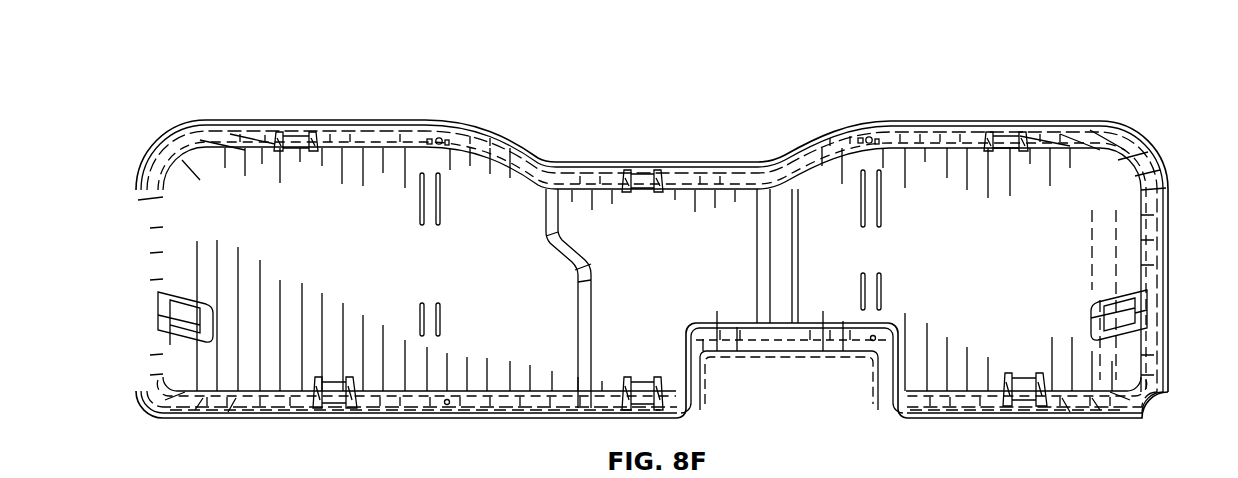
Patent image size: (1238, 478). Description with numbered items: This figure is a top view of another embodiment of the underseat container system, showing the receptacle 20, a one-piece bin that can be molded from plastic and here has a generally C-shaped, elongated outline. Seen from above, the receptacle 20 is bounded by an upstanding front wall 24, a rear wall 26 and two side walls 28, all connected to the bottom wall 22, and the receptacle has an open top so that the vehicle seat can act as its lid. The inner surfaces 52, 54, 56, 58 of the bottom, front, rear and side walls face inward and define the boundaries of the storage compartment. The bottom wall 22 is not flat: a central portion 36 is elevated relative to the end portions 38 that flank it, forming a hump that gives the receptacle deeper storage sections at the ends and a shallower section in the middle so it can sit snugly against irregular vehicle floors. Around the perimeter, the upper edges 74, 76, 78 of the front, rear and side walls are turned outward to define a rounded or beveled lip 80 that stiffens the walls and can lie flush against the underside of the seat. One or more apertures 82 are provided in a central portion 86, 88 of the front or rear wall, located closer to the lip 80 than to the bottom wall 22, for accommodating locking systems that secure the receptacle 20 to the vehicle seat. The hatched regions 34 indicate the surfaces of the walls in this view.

The receptacle 20 is at (178, 45).
The bottom wall 22 is at (1092, 232).
The front wall 24 is at (1060, 418).
The rear wall 26 is at (986, 124).
The side walls 28 is at (1168, 325).
The rib hatching / surface 34 is at (243, 168).
The central portion 36 is at (719, 302).
The end portions 38 is at (1120, 360).
The inner surface 52 is at (517, 190).
The inner surface 54 is at (1122, 398).
The inner surface 56 is at (1065, 130).
The inner surface 58 is at (162, 180).
The upper edge 74 is at (226, 422).
The upper edge 76 is at (742, 162).
The upper edge 78 is at (1165, 200).
The lip 80 is at (1148, 146).
The apertures 82 is at (432, 138).
The central portion 86 is at (517, 420).
The central portion 88 is at (832, 138).